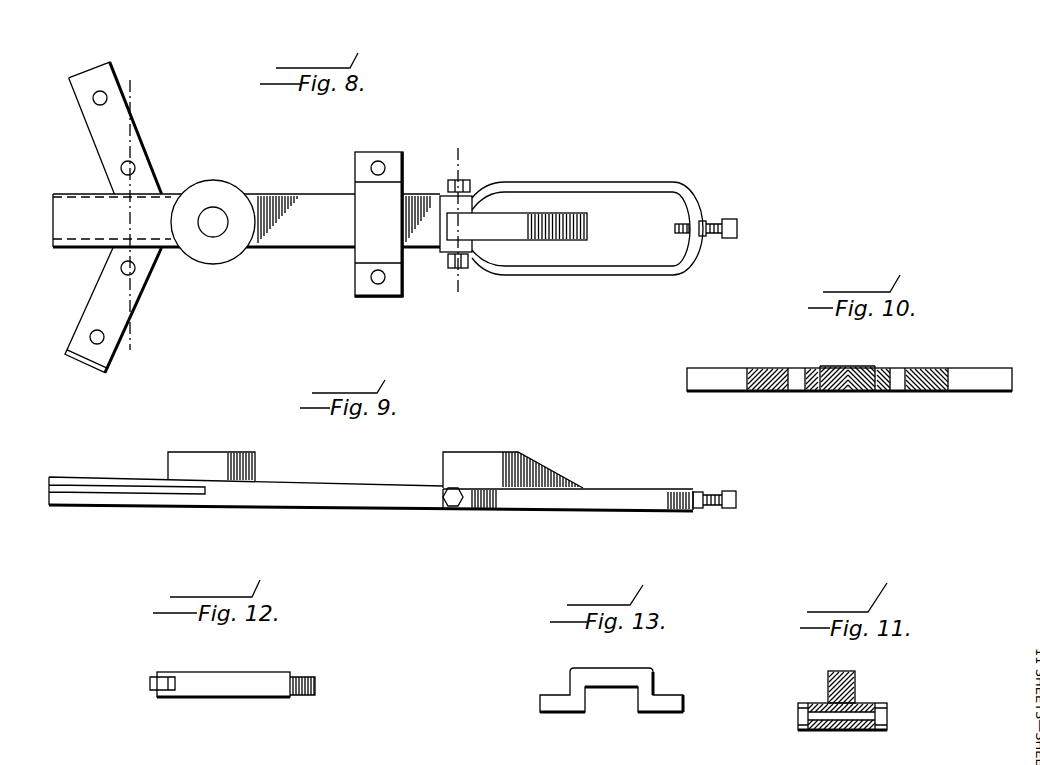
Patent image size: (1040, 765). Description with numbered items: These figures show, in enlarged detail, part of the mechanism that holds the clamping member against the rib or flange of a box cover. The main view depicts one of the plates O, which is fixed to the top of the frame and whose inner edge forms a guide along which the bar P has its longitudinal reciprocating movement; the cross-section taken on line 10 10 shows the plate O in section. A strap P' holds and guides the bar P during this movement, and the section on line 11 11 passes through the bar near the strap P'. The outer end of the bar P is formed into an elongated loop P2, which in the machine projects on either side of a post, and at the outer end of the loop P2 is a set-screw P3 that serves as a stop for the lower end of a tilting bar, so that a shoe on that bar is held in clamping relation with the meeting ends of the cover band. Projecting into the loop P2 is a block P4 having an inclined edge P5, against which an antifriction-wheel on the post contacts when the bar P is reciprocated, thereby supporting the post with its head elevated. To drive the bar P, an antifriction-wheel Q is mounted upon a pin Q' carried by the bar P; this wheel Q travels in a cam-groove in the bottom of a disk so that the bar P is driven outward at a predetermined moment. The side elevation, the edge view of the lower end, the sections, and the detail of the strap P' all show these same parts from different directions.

In FIG. 8, the plate O is at (155, 168).
In FIG. 10, the plate O is at (785, 392).
In FIG. 12, the plate O is at (273, 697).
In FIG. 8, the bar P is at (246, 245).
In FIG. 9, the bar P is at (371, 514).
In FIG. 8, the strap P' is at (379, 243).
In FIG. 13, the strap P' is at (615, 676).
In FIG. 8, the elongated loop P2 is at (607, 185).
In FIG. 9, the elongated loop P2 is at (650, 490).
In FIG. 8, the set-screw P3 is at (734, 225).
In FIG. 9, the set-screw P3 is at (731, 491).
In FIG. 9, the block P4 is at (473, 470).
In FIG. 8, the inclined edge P5 is at (540, 222).
In FIG. 9, the inclined edge P5 is at (545, 472).
In FIG. 11, the inclined edge P5 is at (855, 678).
In FIG. 8, the antifriction-wheel Q is at (213, 238).
In FIG. 9, the antifriction-wheel Q is at (211, 450).
In FIG. 8, the pin Q' is at (220, 194).
In FIG. 8, the section line 10 10 is at (131, 222).
In FIG. 8, the section line 11 11 is at (458, 219).